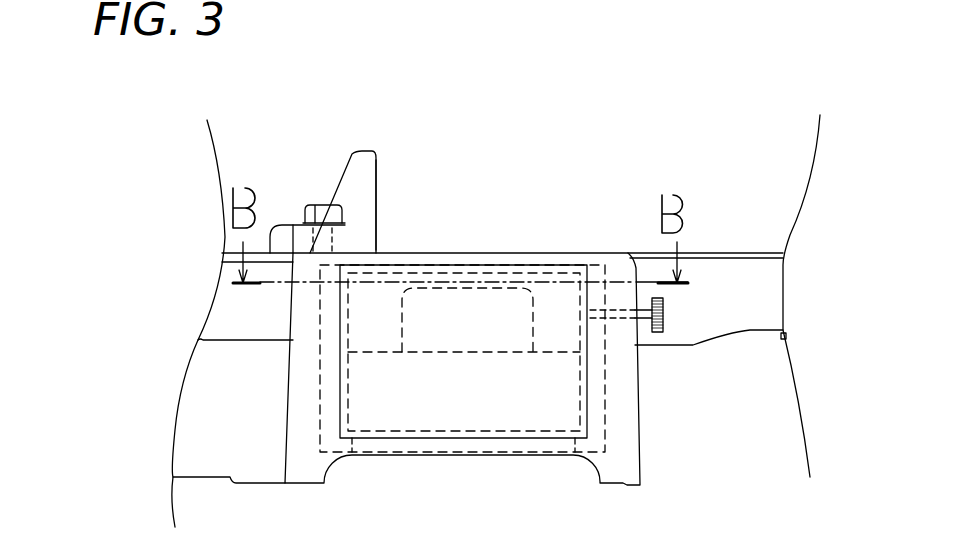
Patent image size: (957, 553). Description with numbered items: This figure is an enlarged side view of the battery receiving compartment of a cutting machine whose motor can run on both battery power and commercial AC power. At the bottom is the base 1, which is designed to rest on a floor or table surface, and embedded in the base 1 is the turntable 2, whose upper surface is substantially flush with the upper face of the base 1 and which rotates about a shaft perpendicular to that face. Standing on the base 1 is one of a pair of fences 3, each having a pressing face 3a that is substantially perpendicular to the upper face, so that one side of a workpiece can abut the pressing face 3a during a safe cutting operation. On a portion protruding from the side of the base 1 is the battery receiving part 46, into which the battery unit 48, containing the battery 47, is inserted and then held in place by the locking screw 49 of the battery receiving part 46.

The base 1 is at (642, 452).
The turntable 2 is at (425, 250).
The fence 3 is at (342, 170).
The pressing face 3a is at (378, 173).
The battery receiving part 46 is at (605, 392).
The battery 47 is at (467, 305).
The battery unit 48 is at (495, 437).
The locking screw 49 is at (663, 318).